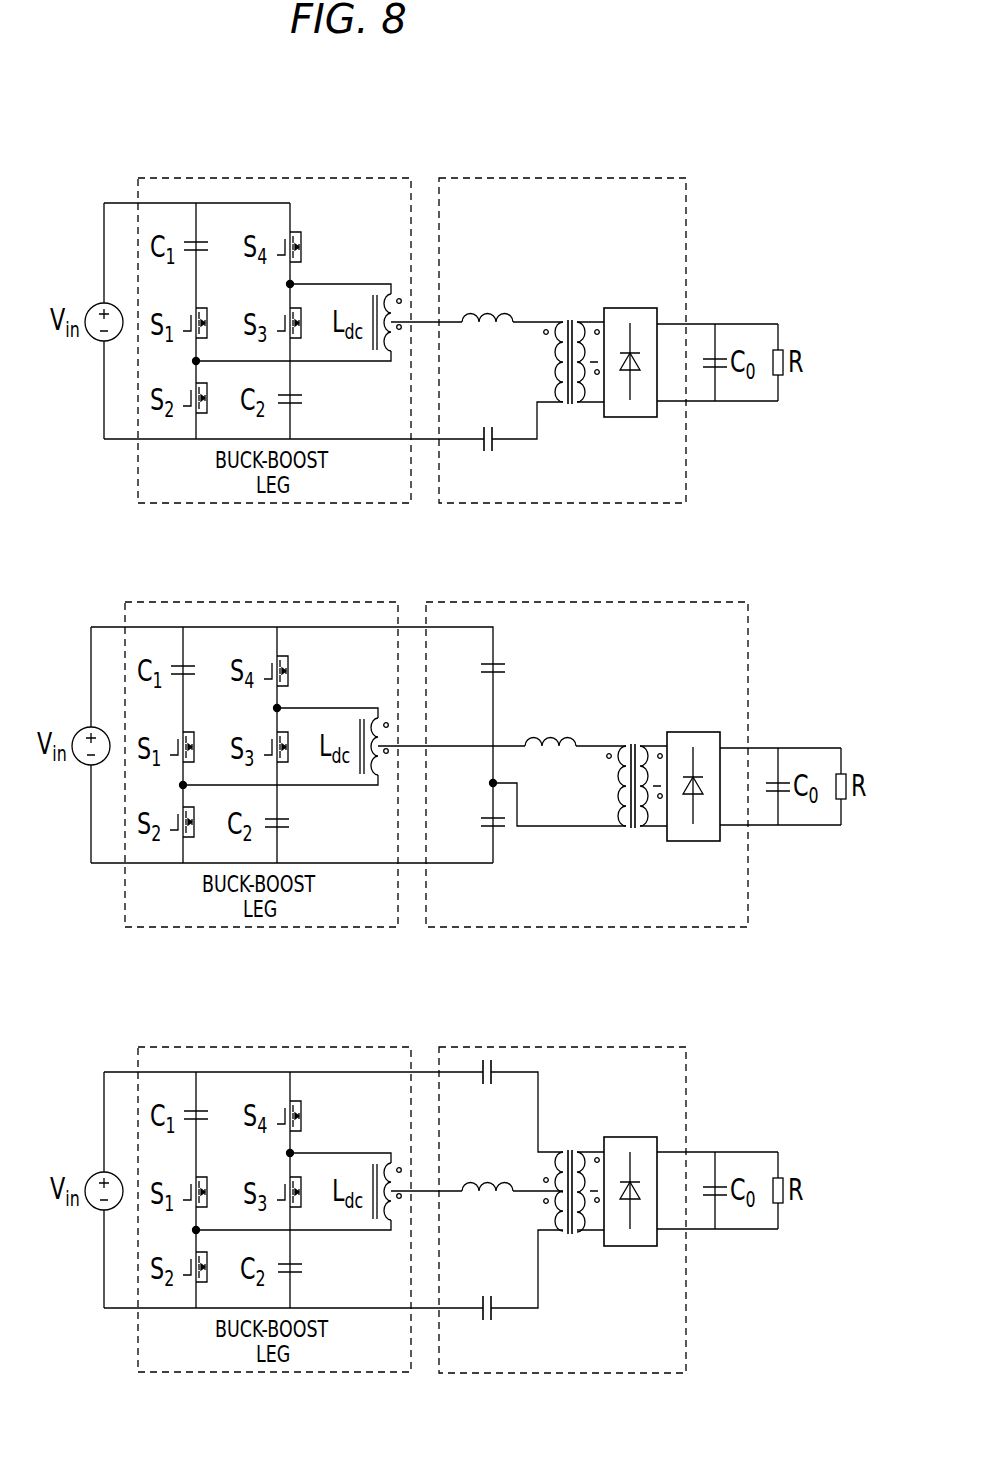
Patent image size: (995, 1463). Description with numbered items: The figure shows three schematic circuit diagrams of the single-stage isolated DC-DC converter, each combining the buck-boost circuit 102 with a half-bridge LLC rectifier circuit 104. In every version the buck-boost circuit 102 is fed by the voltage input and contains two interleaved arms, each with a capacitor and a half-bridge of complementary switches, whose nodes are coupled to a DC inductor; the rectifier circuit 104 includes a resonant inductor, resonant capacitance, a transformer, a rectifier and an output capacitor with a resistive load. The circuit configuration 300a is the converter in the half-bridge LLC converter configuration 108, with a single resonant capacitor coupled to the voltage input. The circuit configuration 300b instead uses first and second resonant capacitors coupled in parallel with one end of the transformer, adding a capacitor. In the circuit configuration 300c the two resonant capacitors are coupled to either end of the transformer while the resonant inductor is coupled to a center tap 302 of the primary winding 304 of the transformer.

The buck-boost circuit 102 is at (243, 173).
The rectifier circuit 104 is at (472, 173).
The half-bridge LLC converter configuration 108 is at (727, 245).
The circuit configuration 300a is at (714, 171).
The circuit configuration 300b is at (700, 592).
The circuit configuration 300c is at (714, 1039).
The center tap 302 is at (559, 1210).
The primary winding 304 is at (556, 1206).